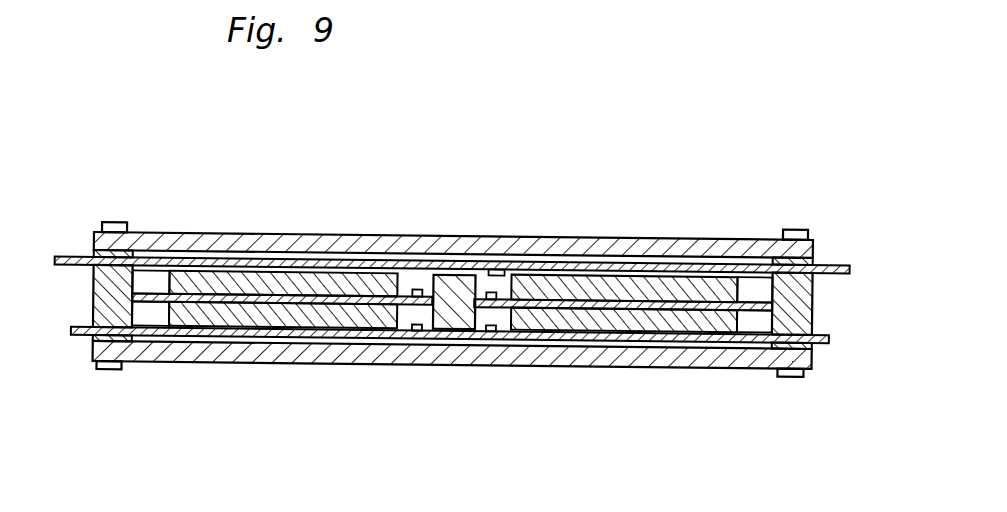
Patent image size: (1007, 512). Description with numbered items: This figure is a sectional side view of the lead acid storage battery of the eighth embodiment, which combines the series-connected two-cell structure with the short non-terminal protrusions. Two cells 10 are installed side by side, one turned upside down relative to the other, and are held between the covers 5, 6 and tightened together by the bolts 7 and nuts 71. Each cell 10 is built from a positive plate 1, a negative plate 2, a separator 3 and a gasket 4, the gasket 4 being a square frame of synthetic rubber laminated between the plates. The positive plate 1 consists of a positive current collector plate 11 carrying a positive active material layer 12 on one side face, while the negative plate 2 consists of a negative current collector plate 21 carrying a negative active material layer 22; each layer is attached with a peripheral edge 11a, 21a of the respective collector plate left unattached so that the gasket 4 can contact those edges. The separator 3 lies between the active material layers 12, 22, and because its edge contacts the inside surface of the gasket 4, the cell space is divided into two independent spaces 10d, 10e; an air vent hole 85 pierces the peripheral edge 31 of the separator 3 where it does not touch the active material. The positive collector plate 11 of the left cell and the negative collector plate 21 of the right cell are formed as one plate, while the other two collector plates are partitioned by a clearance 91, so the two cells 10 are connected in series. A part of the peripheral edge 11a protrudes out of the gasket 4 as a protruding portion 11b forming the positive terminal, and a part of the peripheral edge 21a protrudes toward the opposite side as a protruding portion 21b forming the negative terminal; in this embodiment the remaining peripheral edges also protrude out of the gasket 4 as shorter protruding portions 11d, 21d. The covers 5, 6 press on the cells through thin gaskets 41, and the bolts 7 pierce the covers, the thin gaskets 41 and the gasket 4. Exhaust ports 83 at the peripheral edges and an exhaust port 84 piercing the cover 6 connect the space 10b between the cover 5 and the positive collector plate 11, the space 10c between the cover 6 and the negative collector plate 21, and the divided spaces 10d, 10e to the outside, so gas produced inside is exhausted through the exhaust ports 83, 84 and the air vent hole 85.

The positive plate 1 is at (649, 129).
The negative plate 2 is at (316, 133).
The separator 3 is at (348, 274).
The gasket 4 is at (460, 315).
The cover 5 is at (497, 337).
The cover 6 is at (222, 249).
The bolt 7 is at (110, 222).
The cell 10 is at (84, 296).
The space 10b is at (195, 343).
The space 10c is at (196, 250).
The space 10d is at (140, 281).
The space 10e is at (748, 275).
The positive current collector plate 11 is at (600, 250).
The peripheral edge 11a is at (758, 256).
The protruding portion 11b is at (848, 257).
The protruding portion 11d is at (77, 336).
The positive active material layer 12 is at (612, 271).
The negative current collector plate 21 is at (249, 251).
The peripheral edge 21a is at (141, 256).
The protruding portion 21b is at (75, 256).
The protruding portion 21d is at (829, 336).
The negative active material layer 22 is at (267, 275).
The peripheral edge of separator 31 is at (433, 322).
The thin gasket 41 is at (826, 256).
The nut 71 is at (107, 370).
The exhaust port 83 is at (410, 284).
The exhaust port 84 is at (418, 252).
The air vent hole 85 is at (407, 335).
The clearance 91 is at (460, 250).